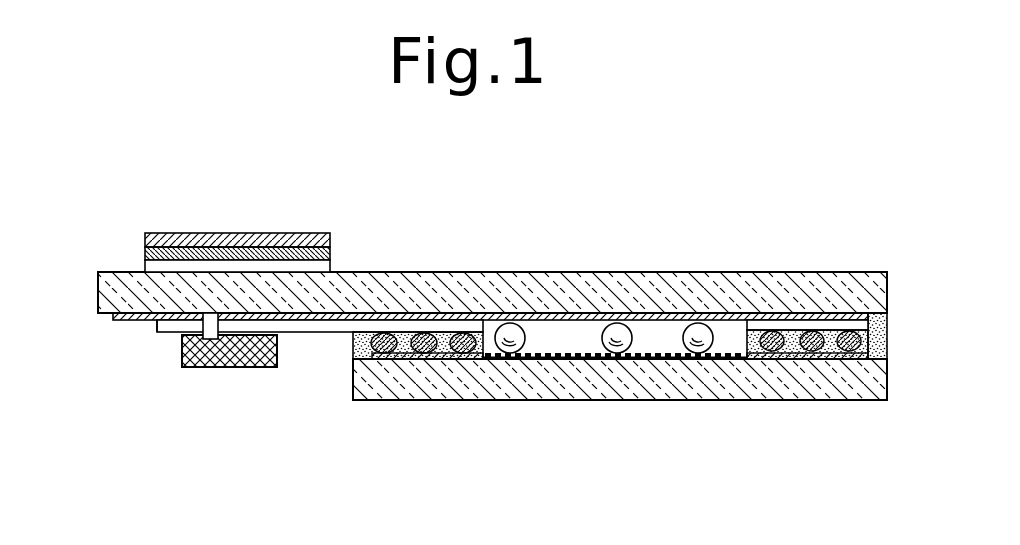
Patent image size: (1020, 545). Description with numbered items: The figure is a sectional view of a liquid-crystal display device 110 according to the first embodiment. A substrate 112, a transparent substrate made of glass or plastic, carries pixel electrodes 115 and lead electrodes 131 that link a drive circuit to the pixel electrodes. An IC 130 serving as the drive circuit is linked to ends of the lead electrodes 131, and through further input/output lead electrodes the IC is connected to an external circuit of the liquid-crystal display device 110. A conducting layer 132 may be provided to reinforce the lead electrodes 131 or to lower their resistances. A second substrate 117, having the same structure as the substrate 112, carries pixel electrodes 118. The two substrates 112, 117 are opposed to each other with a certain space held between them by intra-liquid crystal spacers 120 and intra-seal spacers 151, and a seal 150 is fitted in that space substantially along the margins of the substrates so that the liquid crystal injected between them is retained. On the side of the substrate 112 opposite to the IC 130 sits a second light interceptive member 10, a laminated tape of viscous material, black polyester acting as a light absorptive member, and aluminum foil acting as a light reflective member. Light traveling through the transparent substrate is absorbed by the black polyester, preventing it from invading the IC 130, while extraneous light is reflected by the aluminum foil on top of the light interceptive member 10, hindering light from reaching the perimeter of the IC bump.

The second light interceptive member 10 is at (137, 233).
The liquid-crystal display device 110 is at (495, 300).
The substrate 112 is at (838, 303).
The pixel electrodes 115 is at (677, 318).
The substrate 117 is at (566, 380).
The pixel electrodes 118 is at (673, 360).
The intra-liquid crystal spacers 120 is at (519, 323).
The IC 130 is at (222, 368).
The lead electrodes 131 is at (292, 316).
The conducting layer 132 is at (312, 328).
The seal 150 is at (366, 331).
The intra-seal spacers 151 is at (432, 334).